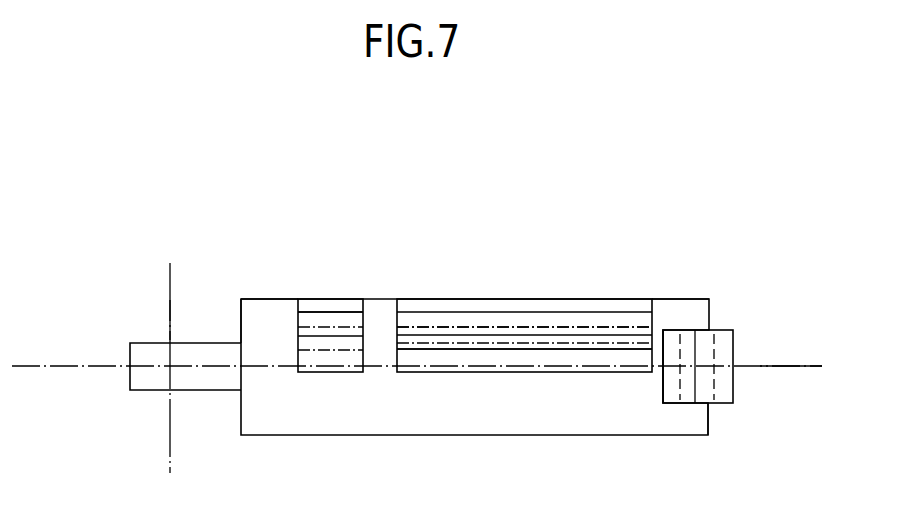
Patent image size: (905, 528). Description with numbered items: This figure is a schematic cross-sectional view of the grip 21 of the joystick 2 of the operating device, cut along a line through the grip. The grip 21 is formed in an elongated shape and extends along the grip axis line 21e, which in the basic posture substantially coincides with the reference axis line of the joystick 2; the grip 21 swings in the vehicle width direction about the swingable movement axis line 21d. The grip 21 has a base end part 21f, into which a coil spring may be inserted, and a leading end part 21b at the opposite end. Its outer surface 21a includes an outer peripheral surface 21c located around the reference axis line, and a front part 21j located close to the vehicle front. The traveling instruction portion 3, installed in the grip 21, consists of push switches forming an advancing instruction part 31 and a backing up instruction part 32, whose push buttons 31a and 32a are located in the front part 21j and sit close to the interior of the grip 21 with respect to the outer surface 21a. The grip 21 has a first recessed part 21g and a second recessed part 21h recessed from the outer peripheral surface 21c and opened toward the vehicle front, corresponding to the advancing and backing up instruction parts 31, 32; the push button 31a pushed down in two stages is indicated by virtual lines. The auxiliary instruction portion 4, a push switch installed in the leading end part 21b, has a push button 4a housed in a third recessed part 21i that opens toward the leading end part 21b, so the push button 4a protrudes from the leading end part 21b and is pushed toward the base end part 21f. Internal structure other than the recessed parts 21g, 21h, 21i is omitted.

The joystick 2 is at (722, 283).
The traveling instruction portion 3 is at (435, 208).
The auxiliary instruction portion 4 is at (749, 310).
The push button 4a is at (733, 380).
The grip 21 is at (272, 425).
The outer surface 21a is at (283, 299).
The leading end part 21b is at (710, 420).
The outer peripheral surface 21c is at (258, 299).
The swingable movement axis line 21d is at (168, 318).
The grip axis line 21e is at (803, 367).
The base end part 21f is at (138, 378).
The first recessed part 21g is at (452, 370).
The second recessed part 21h is at (327, 368).
The third recessed part 21i is at (665, 388).
The front part 21j is at (672, 300).
The advancing instruction part 31 is at (447, 311).
The push button 31a is at (487, 337).
The backing up instruction part 32 is at (345, 310).
The push button 32a is at (338, 311).